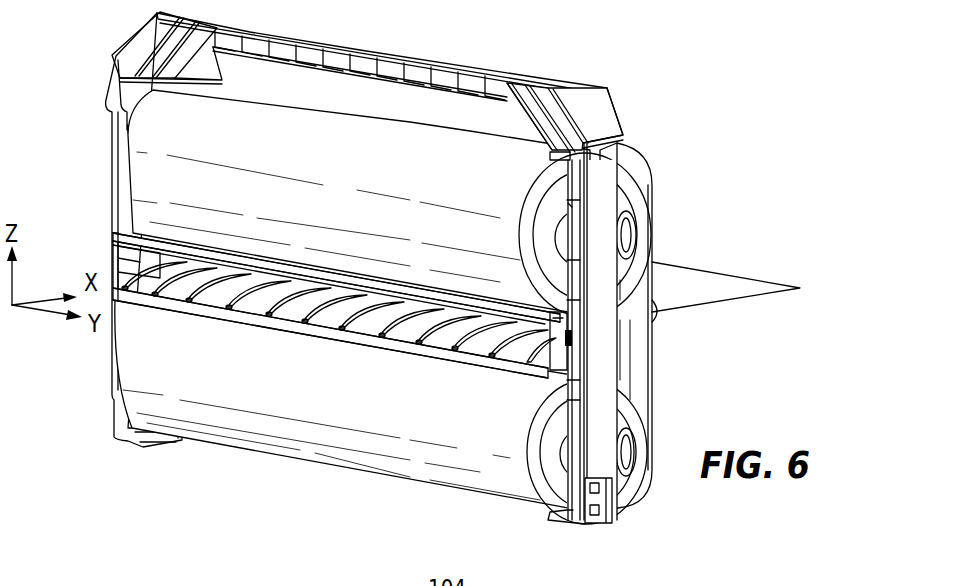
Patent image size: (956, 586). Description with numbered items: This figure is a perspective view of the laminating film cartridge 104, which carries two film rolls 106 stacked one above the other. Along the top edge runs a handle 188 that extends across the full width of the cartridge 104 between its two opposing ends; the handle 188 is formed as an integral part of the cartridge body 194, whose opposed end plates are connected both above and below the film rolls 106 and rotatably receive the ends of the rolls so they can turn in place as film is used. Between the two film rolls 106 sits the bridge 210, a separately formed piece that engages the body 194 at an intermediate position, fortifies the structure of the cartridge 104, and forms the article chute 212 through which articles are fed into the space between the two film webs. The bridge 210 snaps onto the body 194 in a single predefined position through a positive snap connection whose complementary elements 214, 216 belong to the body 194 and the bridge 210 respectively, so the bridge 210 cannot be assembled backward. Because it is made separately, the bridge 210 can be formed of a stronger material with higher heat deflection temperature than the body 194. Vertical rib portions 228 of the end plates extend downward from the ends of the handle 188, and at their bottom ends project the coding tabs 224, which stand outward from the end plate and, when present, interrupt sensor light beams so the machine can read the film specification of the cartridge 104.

The cartridge 104 is at (423, 284).
The film rolls 106 is at (421, 189).
The handle 188 is at (493, 72).
The cartridge body 194 is at (593, 370).
The bridge 210 is at (339, 385).
The article chute 212 is at (303, 312).
The complementary snap connection element of the body 214 is at (572, 337).
The complementary snap connection element of the bridge 216 is at (130, 258).
The coding tabs 224 is at (606, 512).
The vertical rib portions 228 is at (618, 305).